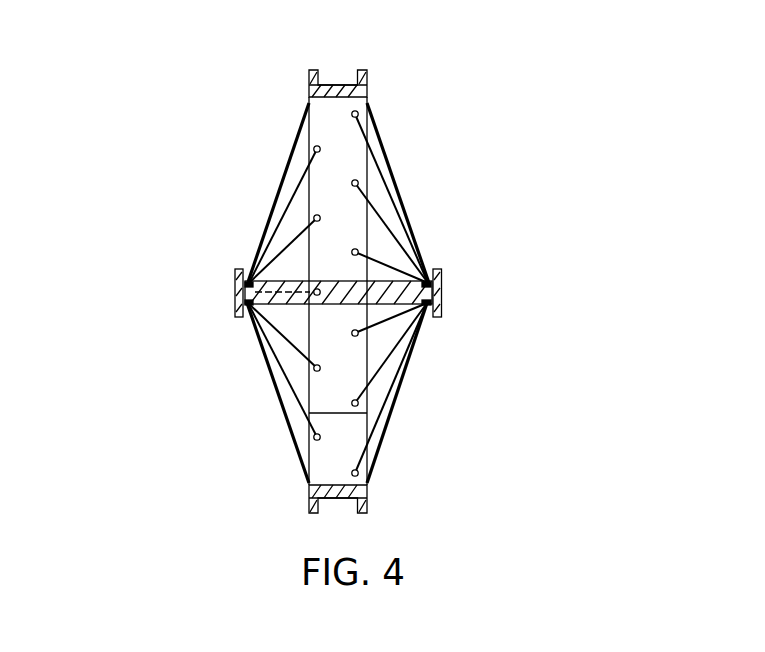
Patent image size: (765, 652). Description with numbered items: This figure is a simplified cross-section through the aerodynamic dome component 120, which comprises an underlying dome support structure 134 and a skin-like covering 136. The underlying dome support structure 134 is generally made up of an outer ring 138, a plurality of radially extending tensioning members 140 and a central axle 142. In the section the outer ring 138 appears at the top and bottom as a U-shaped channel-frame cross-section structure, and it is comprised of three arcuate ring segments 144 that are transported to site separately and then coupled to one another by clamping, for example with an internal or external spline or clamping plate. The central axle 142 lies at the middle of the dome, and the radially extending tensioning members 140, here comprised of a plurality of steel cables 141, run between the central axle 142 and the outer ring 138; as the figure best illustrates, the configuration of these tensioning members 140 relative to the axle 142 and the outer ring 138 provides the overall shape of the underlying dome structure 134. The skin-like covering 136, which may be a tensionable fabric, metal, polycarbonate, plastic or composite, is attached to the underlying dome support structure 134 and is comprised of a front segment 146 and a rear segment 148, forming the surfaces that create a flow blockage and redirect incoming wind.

The aerodynamic dome component 120 is at (404, 56).
The underlying dome support structure 134 is at (212, 291).
The skin-like covering 136 is at (328, 293).
The outer ring 138 is at (271, 291).
The radially extending tensioning members 140 is at (317, 293).
The steel cables 141 is at (390, 223).
The central axle 142 is at (442, 292).
The arcuate ring segments 144 is at (318, 112).
The front segment 146 is at (397, 393).
The rear segment 148 is at (278, 192).